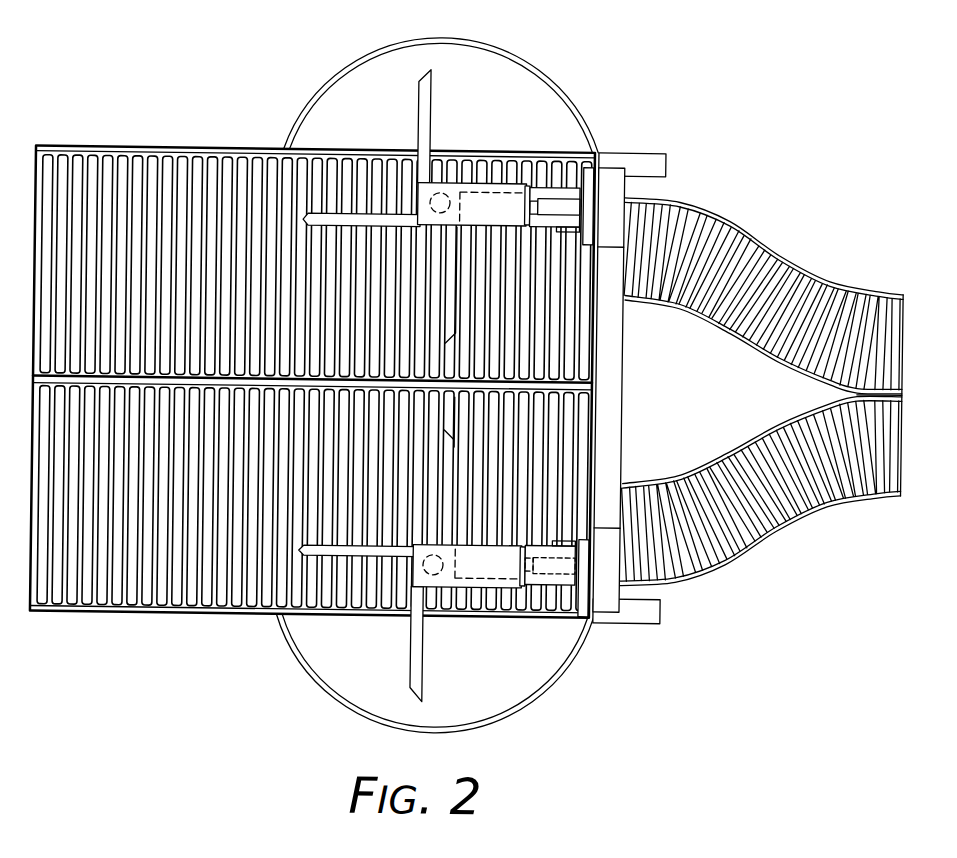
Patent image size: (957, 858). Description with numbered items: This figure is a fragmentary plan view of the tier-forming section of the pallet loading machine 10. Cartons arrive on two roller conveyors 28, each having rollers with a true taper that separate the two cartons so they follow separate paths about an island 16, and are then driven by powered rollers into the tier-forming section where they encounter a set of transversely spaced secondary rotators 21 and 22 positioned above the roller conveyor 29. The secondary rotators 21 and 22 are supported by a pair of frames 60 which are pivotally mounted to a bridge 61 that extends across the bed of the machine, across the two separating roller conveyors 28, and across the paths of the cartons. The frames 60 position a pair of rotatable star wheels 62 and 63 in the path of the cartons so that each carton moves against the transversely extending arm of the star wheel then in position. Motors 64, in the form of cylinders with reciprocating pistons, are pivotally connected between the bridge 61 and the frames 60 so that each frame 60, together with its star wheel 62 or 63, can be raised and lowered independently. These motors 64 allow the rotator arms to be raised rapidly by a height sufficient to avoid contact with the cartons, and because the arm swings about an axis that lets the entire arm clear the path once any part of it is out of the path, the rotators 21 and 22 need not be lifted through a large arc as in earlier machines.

The pallet loading machine 10 is at (734, 203).
The island 16 is at (857, 391).
The secondary rotator 21 is at (405, 116).
The secondary rotator 22 is at (360, 654).
The roller conveyor 28 is at (773, 514).
The roller conveyor 29 is at (194, 583).
The frame 60 is at (491, 186).
The bridge 61 is at (623, 380).
The star wheel 62 is at (418, 645).
The star wheel 63 is at (429, 85).
The motor 64 is at (550, 200).